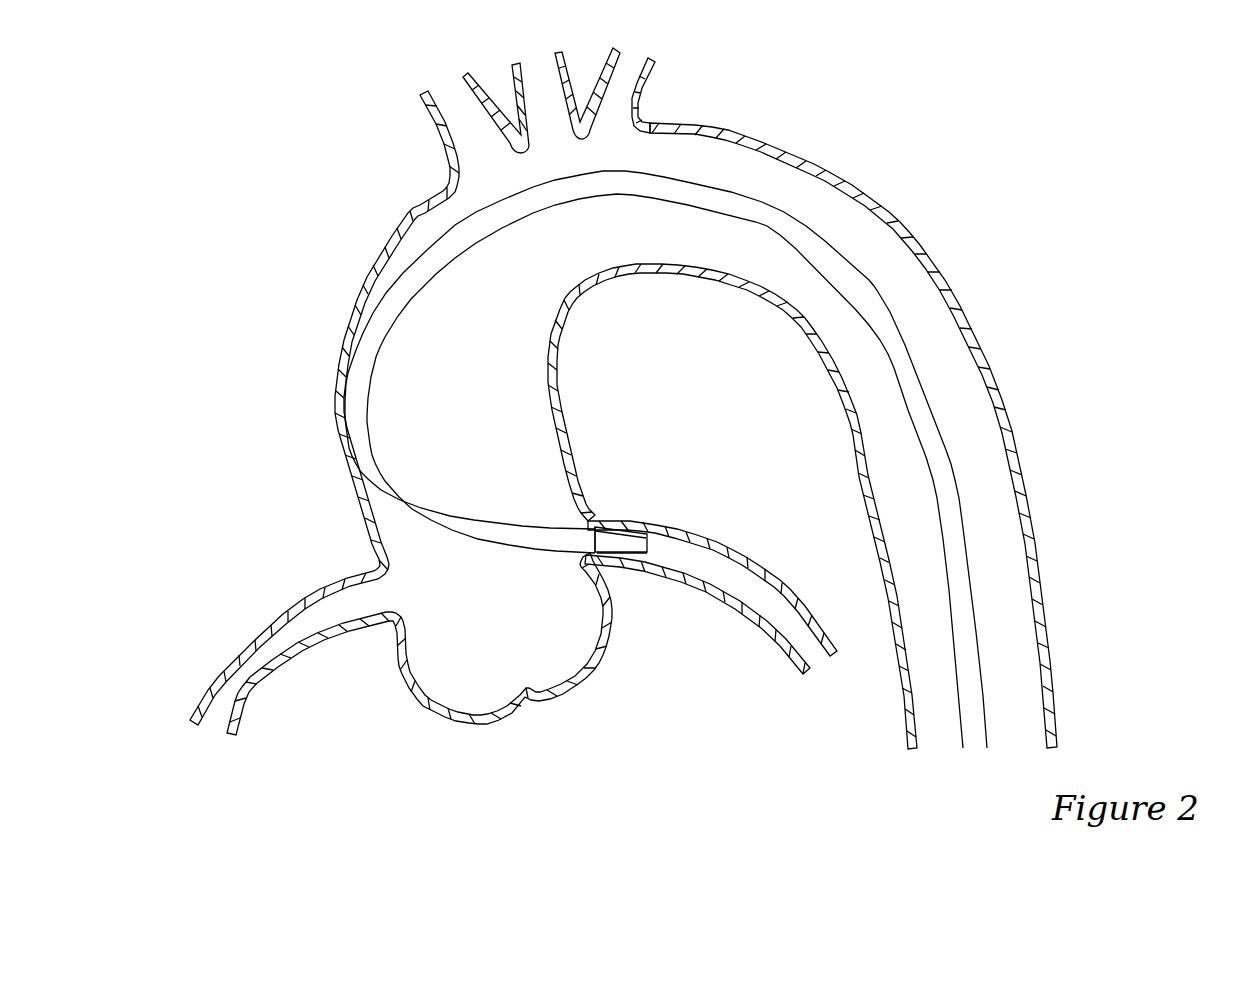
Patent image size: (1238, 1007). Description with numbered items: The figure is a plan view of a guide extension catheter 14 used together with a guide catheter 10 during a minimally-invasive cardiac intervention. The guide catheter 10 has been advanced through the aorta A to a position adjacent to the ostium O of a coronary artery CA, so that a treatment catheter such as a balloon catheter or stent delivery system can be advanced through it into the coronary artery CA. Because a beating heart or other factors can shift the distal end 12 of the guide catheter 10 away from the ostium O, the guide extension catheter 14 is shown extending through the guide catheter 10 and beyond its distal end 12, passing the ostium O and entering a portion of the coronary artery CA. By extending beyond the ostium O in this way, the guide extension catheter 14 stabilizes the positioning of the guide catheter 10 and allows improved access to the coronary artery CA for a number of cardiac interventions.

The aorta A is at (812, 195).
The guide catheter 10 is at (902, 328).
The distal end 12 is at (613, 553).
The guide extension catheter 14 is at (640, 540).
The ostium O is at (603, 527).
The coronary artery CA is at (712, 567).